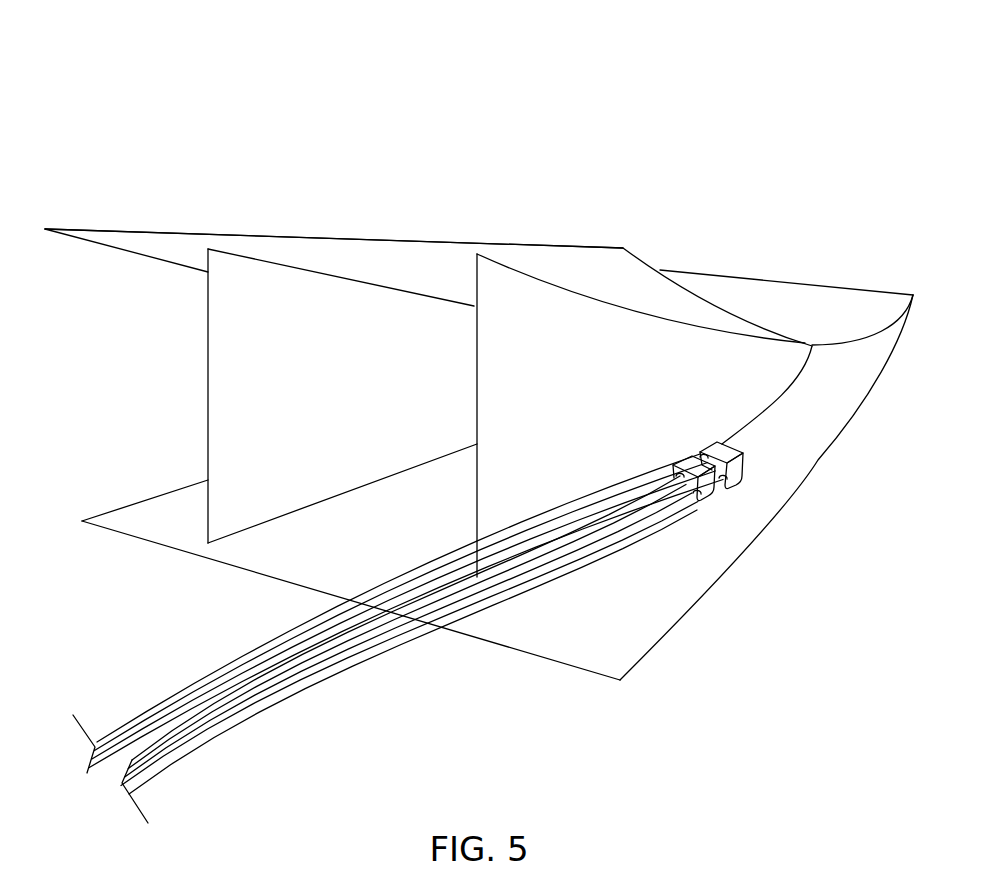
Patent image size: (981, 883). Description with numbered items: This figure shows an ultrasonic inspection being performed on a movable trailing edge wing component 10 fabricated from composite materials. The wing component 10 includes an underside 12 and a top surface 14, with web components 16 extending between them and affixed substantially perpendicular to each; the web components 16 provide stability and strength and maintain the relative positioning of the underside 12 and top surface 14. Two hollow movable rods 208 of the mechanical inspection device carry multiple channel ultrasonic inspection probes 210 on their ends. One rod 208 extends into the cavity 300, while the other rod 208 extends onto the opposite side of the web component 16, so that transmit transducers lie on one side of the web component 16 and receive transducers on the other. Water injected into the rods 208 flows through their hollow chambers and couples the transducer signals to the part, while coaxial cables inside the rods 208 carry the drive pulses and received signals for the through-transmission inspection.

The movable trailing edge wing component 10 is at (457, 93).
The underside 12 is at (380, 238).
The top surface 14 is at (738, 553).
The web components 16 is at (300, 387).
The movable rods 208 is at (291, 657).
The multiple channel ultrasonic inspection probes 210 is at (742, 467).
The cavity 300 is at (338, 526).